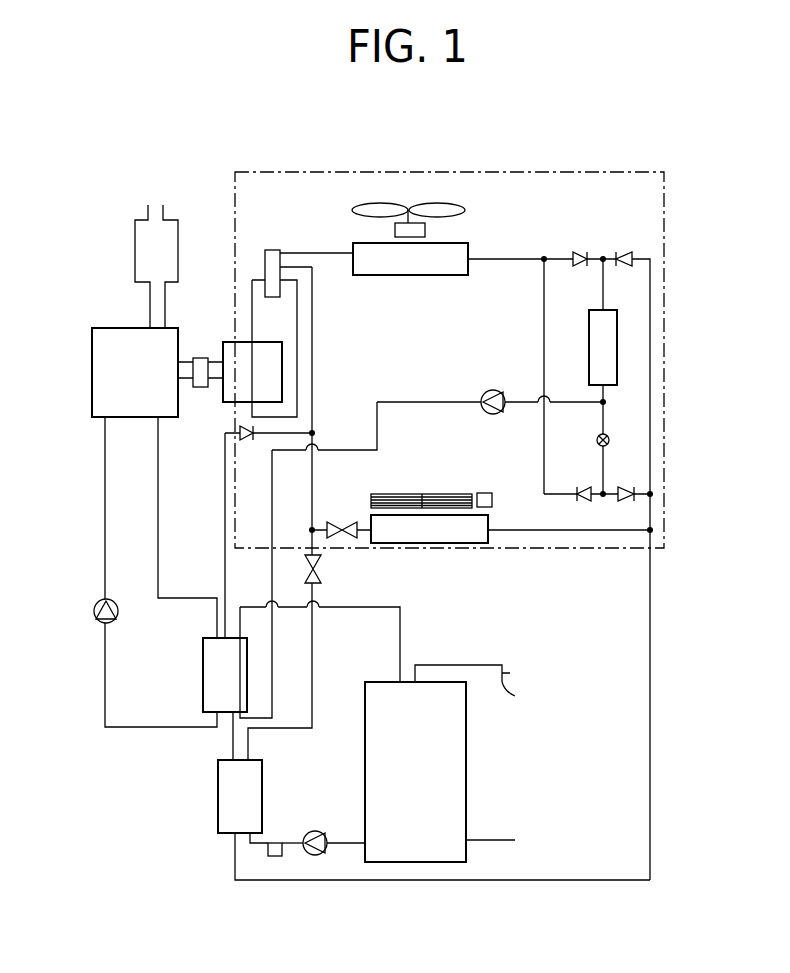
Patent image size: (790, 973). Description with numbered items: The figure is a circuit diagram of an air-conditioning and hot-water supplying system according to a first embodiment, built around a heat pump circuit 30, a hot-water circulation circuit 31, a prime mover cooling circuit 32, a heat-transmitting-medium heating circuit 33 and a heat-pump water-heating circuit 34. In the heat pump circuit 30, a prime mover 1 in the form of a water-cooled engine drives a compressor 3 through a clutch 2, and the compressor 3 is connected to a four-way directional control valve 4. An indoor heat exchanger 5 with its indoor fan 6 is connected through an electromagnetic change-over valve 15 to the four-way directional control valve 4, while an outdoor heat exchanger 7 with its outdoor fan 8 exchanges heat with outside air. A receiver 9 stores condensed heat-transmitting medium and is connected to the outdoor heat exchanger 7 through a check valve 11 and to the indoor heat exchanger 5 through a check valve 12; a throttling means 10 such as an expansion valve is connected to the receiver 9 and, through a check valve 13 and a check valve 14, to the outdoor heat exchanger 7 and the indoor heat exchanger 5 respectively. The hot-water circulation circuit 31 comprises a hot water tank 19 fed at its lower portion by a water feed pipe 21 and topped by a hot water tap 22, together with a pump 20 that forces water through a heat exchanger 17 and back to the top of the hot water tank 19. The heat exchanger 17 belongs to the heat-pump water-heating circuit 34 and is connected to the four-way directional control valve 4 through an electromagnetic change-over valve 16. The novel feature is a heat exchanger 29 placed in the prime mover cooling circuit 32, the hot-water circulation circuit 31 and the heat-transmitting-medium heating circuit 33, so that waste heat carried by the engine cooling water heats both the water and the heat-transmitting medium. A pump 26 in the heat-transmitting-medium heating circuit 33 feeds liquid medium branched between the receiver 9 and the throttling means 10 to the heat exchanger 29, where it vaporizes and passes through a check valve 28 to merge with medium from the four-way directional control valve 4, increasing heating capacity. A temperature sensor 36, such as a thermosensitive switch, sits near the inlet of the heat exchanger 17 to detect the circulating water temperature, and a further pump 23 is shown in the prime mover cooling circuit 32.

The prime mover 1 is at (92, 330).
The clutch 2 is at (200, 358).
The compressor 3 is at (272, 342).
The four-way directional control valve 4 is at (272, 250).
The indoor heat exchanger 5 is at (462, 543).
The indoor fan 6 is at (432, 494).
The outdoor heat exchanger 7 is at (468, 246).
The outdoor fan 8 is at (462, 207).
The receiver 9 is at (589, 320).
The throttling means 10 is at (598, 436).
The check valve 11 is at (577, 252).
The check valve 12 is at (625, 252).
The check valve 13 is at (578, 487).
The check valve 14 is at (627, 487).
The electromagnetic change-over valve 15 is at (347, 522).
The electromagnetic change-over valve 16 is at (322, 566).
The heat exchanger 17 is at (218, 822).
The hot water tank 19 is at (466, 758).
The pump 20 is at (316, 831).
The water feed pipe 21 is at (505, 840).
The hot water tap 22 is at (518, 678).
The pump 23 is at (94, 611).
The pump 26 is at (485, 390).
The check valve 28 is at (240, 433).
The heat exchanger 29 is at (203, 672).
The heat pump circuit 30 is at (603, 172).
The hot-water circulation circuit 31 is at (367, 607).
The prime mover cooling circuit 32 is at (128, 727).
The heat-transmitting-medium heating circuit 33 is at (573, 400).
The heat-pump water-heating circuit 34 is at (313, 647).
The temperature sensor 36 is at (276, 843).